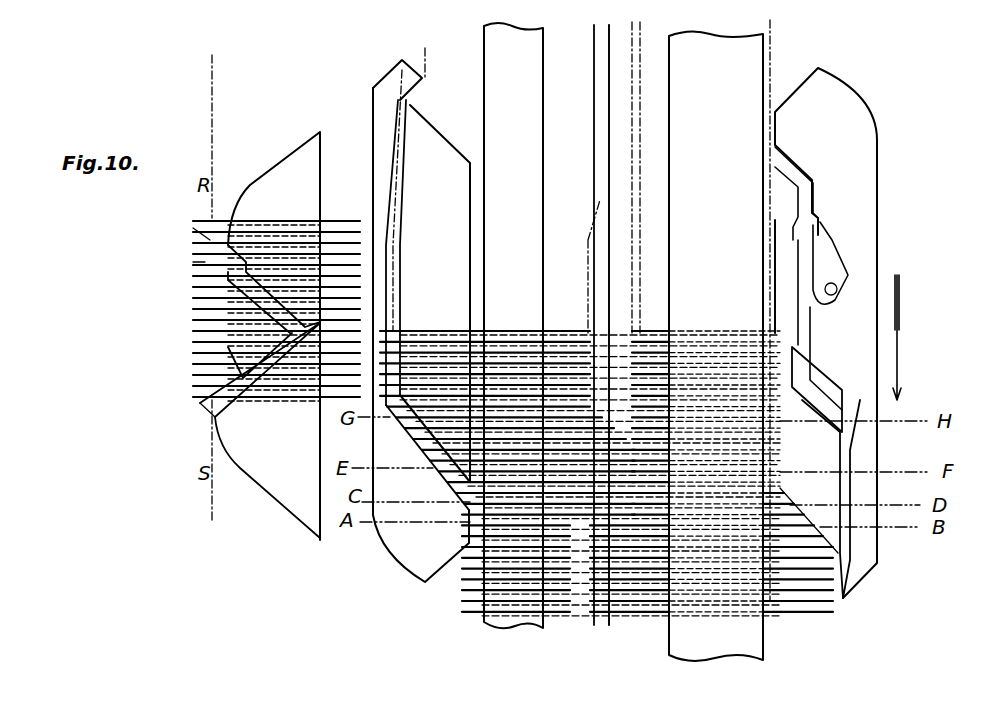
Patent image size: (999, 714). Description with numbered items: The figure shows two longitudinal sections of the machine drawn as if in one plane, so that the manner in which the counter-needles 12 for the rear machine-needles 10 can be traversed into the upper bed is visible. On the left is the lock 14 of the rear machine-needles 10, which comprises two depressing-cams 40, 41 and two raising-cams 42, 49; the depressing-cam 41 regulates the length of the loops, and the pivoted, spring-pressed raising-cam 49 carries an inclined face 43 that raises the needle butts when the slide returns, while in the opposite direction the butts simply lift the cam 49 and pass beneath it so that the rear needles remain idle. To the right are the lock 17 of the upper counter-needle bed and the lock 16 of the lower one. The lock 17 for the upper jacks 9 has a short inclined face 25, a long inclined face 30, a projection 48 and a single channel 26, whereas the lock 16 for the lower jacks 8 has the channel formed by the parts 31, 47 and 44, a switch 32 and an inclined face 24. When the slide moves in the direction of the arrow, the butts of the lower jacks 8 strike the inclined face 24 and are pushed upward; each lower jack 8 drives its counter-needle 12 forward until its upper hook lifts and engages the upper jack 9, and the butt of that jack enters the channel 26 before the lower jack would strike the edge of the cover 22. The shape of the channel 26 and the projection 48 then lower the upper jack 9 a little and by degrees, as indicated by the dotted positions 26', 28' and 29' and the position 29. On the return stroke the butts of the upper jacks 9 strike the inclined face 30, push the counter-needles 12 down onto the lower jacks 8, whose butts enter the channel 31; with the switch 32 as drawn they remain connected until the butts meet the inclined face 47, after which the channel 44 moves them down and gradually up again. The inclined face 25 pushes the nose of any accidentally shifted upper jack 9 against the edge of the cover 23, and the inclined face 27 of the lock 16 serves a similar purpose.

The lower jack 8 is at (652, 333).
The upper jack 9 is at (438, 333).
The rear machine-needle 10 is at (337, 221).
The counter-needle 12 is at (566, 333).
The lock 14 is at (199, 416).
The lock 16 is at (892, 431).
The lock 17 is at (384, 560).
The cover 22 is at (719, 340).
The cover 23 is at (513, 325).
The inclined face 24 is at (808, 520).
The short inclined face 25 is at (455, 556).
The channel 26 is at (372, 237).
The dotted line position 26' is at (578, 325).
The inclined face 27 is at (798, 92).
The dotted line position 28' is at (580, 325).
The position 29 is at (440, 70).
The dotted line position 29' is at (632, 177).
The long inclined face 30 is at (445, 140).
The channel 31 is at (795, 180).
The switch 32 is at (818, 262).
The depressing-cam 40 is at (274, 336).
The depressing-cam 41 is at (267, 430).
The raising-cam 42 is at (260, 324).
The inclined face 43 is at (205, 238).
The channel 44 is at (850, 540).
The inclined face 47 is at (817, 389).
The projection 48 is at (384, 83).
The raising-cam 49 is at (200, 262).